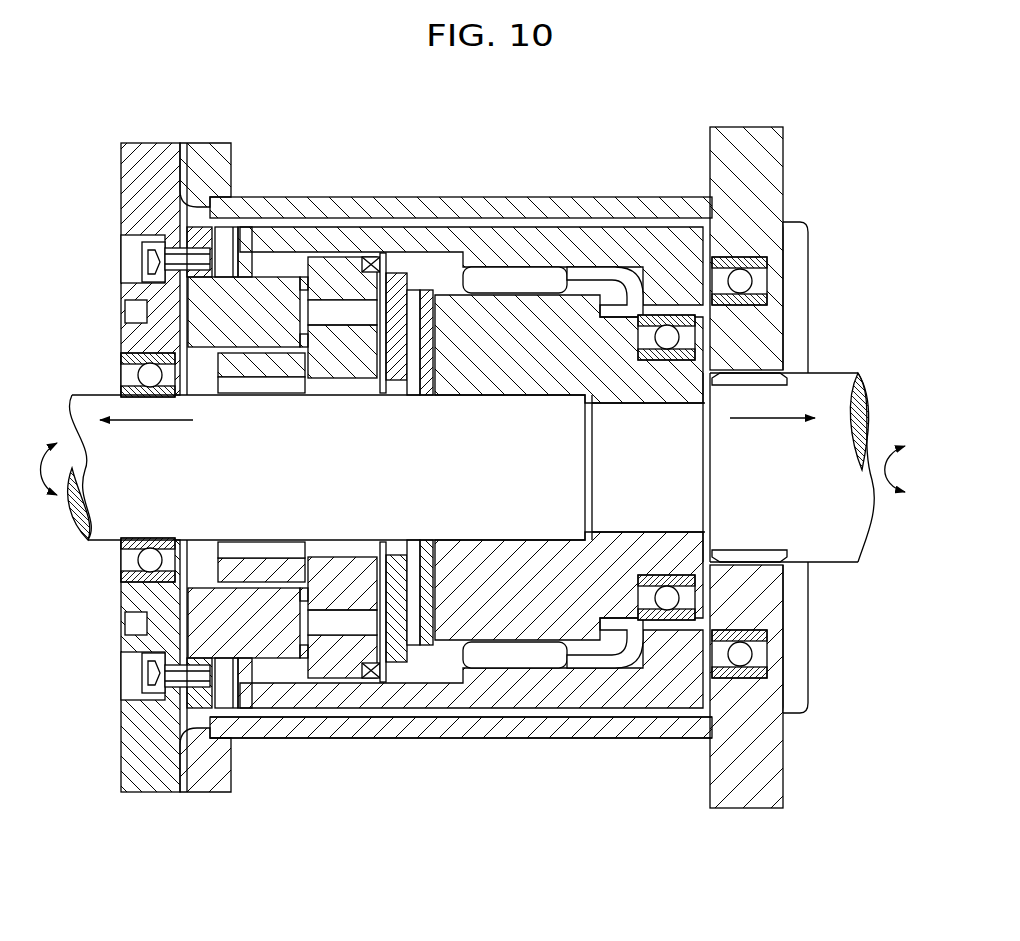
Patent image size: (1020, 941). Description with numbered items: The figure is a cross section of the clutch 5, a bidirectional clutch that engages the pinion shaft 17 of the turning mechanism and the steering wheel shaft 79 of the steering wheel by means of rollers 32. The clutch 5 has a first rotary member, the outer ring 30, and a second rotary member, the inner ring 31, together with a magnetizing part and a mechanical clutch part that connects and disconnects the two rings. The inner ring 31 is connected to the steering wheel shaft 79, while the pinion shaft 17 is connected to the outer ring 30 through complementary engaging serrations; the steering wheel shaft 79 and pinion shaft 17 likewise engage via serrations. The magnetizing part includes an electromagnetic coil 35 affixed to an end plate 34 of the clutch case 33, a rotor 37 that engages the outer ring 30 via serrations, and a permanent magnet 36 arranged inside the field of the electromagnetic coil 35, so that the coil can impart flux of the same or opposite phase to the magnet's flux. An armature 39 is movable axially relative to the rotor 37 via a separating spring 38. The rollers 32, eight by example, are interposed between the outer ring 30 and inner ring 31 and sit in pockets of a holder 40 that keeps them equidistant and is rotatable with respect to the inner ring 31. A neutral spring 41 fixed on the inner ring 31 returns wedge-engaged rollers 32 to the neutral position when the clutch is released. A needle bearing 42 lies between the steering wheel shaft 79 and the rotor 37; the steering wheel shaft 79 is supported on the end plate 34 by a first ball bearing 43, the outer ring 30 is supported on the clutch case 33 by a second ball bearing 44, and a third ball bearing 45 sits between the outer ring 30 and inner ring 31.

The clutch 5 is at (278, 102).
The pinion shaft 17 is at (829, 367).
The outer ring 30 is at (704, 238).
The inner ring 31 is at (583, 360).
The rollers 32 is at (519, 260).
The clutch case 33 is at (575, 741).
The end plate 34 is at (121, 730).
The electromagnetic coil 35 is at (248, 272).
The permanent magnet 36 is at (328, 300).
The rotor 37 is at (323, 348).
The separating spring 38 is at (365, 248).
The armature 39 is at (397, 305).
The holder 40 is at (581, 270).
The neutral spring 41 is at (428, 250).
The needle bearing 42 is at (125, 636).
The first ball bearing 43 is at (131, 561).
The second ball bearing 44 is at (775, 648).
The third ball bearing 45 is at (699, 590).
The steering wheel shaft 79 is at (108, 393).